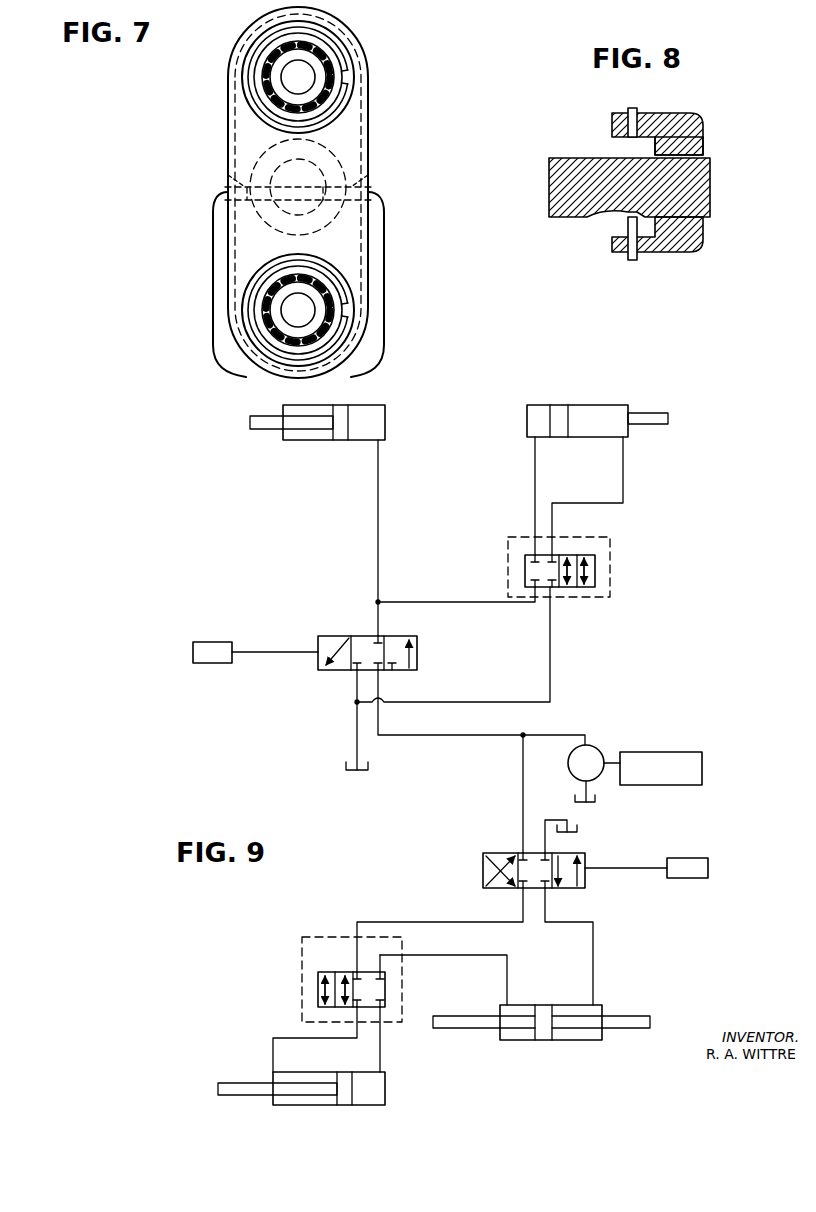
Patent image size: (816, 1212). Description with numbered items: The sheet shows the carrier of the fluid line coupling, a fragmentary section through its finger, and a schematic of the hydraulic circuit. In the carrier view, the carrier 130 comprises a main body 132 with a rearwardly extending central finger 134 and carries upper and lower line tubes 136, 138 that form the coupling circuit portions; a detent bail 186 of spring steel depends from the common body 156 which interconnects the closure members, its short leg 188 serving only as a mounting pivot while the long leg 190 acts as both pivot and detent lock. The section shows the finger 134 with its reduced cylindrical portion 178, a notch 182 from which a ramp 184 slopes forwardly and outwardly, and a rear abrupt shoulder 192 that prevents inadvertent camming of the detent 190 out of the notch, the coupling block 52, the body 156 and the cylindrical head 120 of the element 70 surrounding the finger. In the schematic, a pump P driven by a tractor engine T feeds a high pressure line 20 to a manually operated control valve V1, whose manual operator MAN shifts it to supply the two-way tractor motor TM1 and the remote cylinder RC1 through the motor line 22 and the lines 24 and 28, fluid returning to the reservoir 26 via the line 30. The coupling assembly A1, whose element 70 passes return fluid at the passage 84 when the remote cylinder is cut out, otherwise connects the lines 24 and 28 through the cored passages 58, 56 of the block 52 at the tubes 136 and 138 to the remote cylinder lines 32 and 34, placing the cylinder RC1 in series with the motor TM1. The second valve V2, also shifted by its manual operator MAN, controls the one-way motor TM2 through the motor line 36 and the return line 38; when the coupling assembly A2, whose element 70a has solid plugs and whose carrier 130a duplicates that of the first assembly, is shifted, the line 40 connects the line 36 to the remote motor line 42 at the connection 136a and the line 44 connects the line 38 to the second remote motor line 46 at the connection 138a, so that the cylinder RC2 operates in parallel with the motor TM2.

In FIG. 7, the carrier 130 is at (371, 131).
In FIG. 9, the carrier 130 is at (318, 977).
In FIG. 7, the main body 132 is at (350, 251).
In FIG. 7, the central finger 134 is at (352, 165).
In FIG. 8, the central finger 134 is at (556, 192).
In FIG. 7, the upper line tube 136 is at (322, 38).
In FIG. 9, the upper line tube 136 is at (324, 990).
In FIG. 7, the lower line tube 138 is at (326, 344).
In FIG. 9, the lower line tube 138 is at (346, 989).
In FIG. 7, the remote cylinder line 34 is at (322, 56).
In FIG. 9, the remote cylinder line 34 is at (280, 1038).
In FIG. 7, the remote cylinder line 32 is at (326, 326).
In FIG. 9, the remote cylinder line 32 is at (381, 1051).
In FIG. 7, the notch 182 is at (320, 181).
In FIG. 8, the notch 182 is at (594, 213).
In FIG. 8, the ramp 184 is at (600, 222).
In FIG. 7, the detent bail 186 is at (379, 281).
In FIG. 7, the short leg 188 is at (230, 178).
In FIG. 8, the short leg 188 is at (633, 111).
In FIG. 7, the long leg 190 is at (356, 185).
In FIG. 8, the long leg 190 is at (627, 259).
In FIG. 8, the rear abrupt shoulder 192 is at (641, 232).
In FIG. 8, the common body 156 is at (673, 120).
In FIG. 8, the coupling block 52 is at (704, 149).
In FIG. 8, the reduced cylindrical portion 178 is at (706, 186).
In FIG. 8, the cylindrical head 120 is at (678, 238).
In FIG. 9, the tractor motor TM2 is at (331, 446).
In FIG. 9, the remote cylinder RC2 is at (594, 402).
In FIG. 9, the tractor motor TM1 is at (576, 1043).
In FIG. 9, the remote cylinder RC1 is at (353, 1110).
In FIG. 9, the motor line 36 is at (379, 536).
In FIG. 9, the return line 38 is at (356, 689).
In FIG. 9, the line 40 is at (446, 602).
In FIG. 9, the remote motor line 42 is at (535, 471).
In FIG. 9, the line 44 is at (462, 704).
In FIG. 9, the second remote motor line 46 is at (623, 473).
In FIG. 9, the high pressure line 20 is at (523, 804).
In FIG. 9, the motor line 22 is at (594, 947).
In FIG. 9, the line 24 is at (473, 958).
In FIG. 9, the reservoir 26 is at (357, 773).
In FIG. 9, the line 28 is at (426, 922).
In FIG. 9, the line 30 is at (545, 820).
In FIG. 9, the cored passage 56 is at (357, 969).
In FIG. 9, the cored passage 58 is at (386, 968).
In FIG. 9, the element 70 is at (388, 1004).
In FIG. 9, the element 70a is at (524, 578).
In FIG. 9, the passage 84 is at (368, 975).
In FIG. 9, the carrier 130a is at (597, 583).
In FIG. 9, the coupling connection 136a is at (568, 560).
In FIG. 9, the coupling connection 138a is at (586, 566).
In FIG. 9, the fluid line coupling assembly A1 is at (300, 986).
In FIG. 9, the fluid line coupling assembly A2 is at (612, 569).
In FIG. 9, the control valve V1 is at (483, 869).
In FIG. 9, the control valve V2 is at (419, 657).
In FIG. 9, the manual control MAN is at (255, 652).
In FIG. 9, the pump P is at (594, 773).
In FIG. 9, the tractor engine T is at (668, 760).